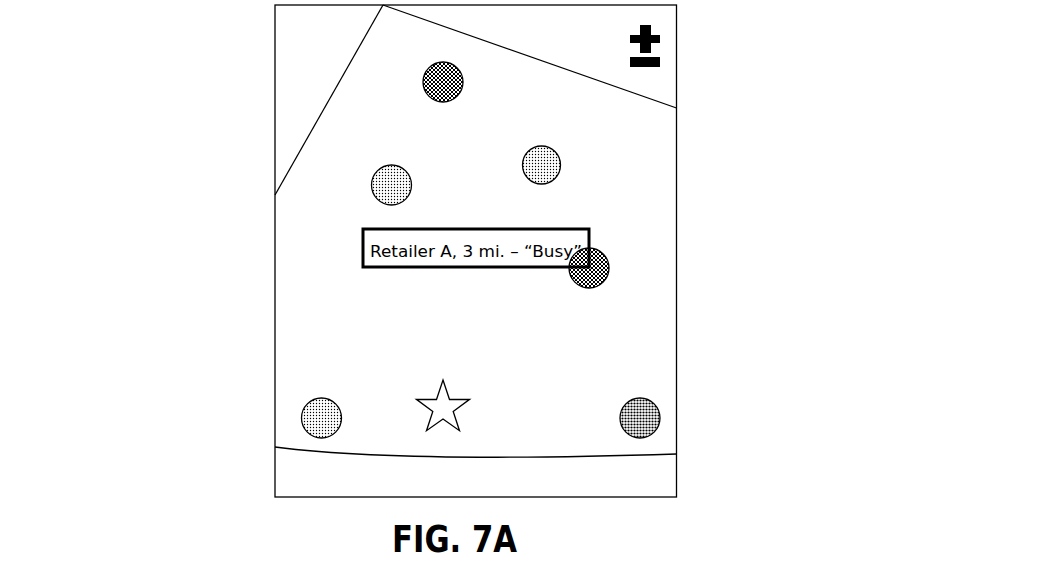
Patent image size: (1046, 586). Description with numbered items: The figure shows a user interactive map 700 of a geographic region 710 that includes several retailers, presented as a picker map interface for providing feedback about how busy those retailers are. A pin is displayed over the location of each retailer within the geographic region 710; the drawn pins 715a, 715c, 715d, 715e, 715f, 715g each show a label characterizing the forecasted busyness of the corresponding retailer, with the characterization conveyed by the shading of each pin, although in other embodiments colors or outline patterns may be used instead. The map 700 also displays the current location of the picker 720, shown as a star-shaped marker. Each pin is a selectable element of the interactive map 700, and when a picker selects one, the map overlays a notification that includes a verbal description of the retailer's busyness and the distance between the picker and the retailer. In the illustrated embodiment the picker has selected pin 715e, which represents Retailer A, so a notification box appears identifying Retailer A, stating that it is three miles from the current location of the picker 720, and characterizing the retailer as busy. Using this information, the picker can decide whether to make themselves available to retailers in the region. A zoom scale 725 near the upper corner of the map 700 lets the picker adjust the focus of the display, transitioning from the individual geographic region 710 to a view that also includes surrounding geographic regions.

The user interactive map 700 is at (361, 251).
The geographic region 710 is at (308, 257).
The pin 715a is at (560, 167).
The pin 715c is at (660, 427).
The pin 715d is at (332, 401).
The pin 715e is at (598, 249).
The pin 715f is at (412, 187).
The pin 715g is at (455, 66).
The current location of the picker 720 is at (470, 400).
The zoom scale 725 is at (660, 42).